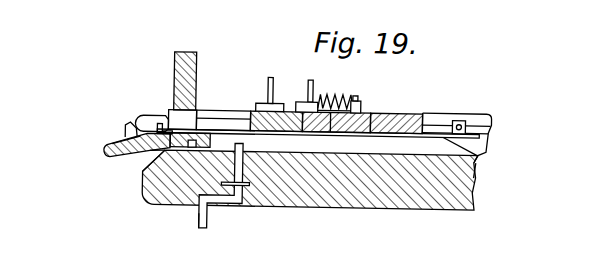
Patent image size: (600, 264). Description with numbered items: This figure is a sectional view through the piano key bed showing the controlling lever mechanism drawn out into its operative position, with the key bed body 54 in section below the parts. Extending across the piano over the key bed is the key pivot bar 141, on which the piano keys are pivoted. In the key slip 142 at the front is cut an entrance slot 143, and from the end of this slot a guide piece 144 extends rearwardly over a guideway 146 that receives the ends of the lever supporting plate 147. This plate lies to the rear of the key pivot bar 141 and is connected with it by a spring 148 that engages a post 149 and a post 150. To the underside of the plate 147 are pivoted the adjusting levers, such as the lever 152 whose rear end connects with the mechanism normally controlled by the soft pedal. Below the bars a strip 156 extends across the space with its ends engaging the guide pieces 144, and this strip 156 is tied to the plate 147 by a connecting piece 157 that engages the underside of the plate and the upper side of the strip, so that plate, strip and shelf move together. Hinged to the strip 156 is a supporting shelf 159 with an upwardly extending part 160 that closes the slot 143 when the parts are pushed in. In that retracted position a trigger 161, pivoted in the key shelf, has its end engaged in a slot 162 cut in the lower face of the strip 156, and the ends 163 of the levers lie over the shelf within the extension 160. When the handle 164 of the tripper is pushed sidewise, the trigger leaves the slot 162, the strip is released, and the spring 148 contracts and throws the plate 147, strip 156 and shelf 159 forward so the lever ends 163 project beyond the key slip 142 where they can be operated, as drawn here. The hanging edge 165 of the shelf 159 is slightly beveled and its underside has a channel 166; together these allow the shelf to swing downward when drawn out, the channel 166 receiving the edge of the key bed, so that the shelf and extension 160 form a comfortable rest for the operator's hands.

The body 54 is at (444, 208).
The key pivot bar 141 is at (253, 106).
The key slip 142 is at (183, 54).
The entrance slot 143 is at (163, 116).
The guide piece 144 is at (480, 111).
The guideway 146 is at (491, 125).
The lever supporting plate 147 is at (414, 120).
The spring 148 is at (329, 97).
The post 149 is at (308, 98).
The post 150 is at (358, 110).
The adjusting lever 152 is at (475, 165).
The strip 156 is at (152, 154).
The connecting piece 157 is at (308, 137).
The supporting shelf 159 is at (113, 158).
The upwardly extending part 160 is at (124, 130).
The trigger 161 is at (239, 205).
The slot 162 is at (200, 135).
The lever ends 163 is at (138, 122).
The handle 164 is at (200, 220).
The hanging edge 165 is at (153, 154).
The channel 166 is at (112, 147).